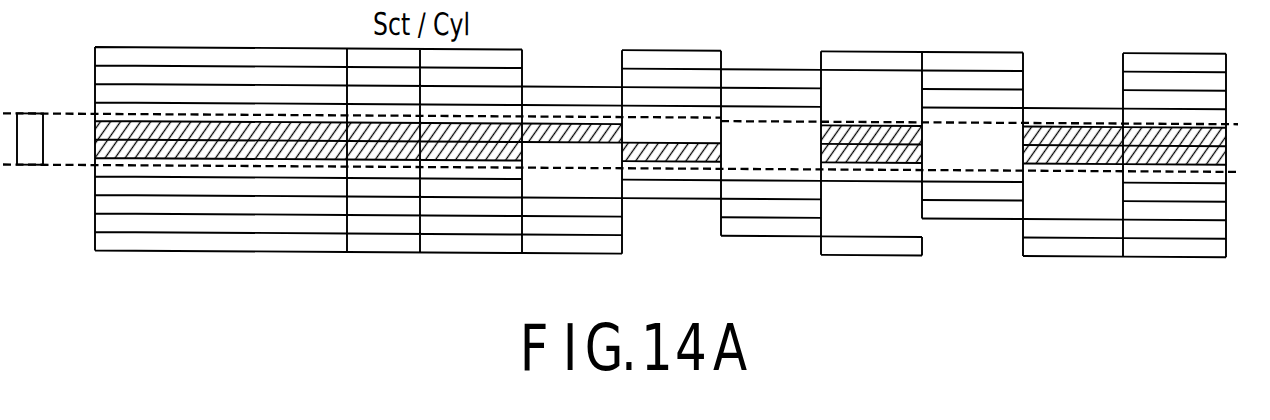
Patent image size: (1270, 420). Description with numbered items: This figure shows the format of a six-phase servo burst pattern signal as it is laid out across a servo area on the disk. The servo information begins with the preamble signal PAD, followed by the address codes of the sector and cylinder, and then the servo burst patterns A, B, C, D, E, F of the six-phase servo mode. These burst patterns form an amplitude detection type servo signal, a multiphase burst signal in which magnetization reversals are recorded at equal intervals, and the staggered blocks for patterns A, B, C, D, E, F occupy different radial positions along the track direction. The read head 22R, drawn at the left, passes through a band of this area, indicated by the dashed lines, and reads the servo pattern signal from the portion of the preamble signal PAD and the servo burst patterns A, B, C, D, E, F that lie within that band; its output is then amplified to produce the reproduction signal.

The read head 22R is at (30, 113).
The preamble signal PAD is at (221, 128).
The servo burst pattern A is at (572, 130).
The servo burst pattern B is at (671, 121).
The servo burst pattern C is at (771, 131).
The servo burst pattern D is at (871, 131).
The servo burst pattern E is at (972, 132).
The servo burst pattern F is at (1073, 133).